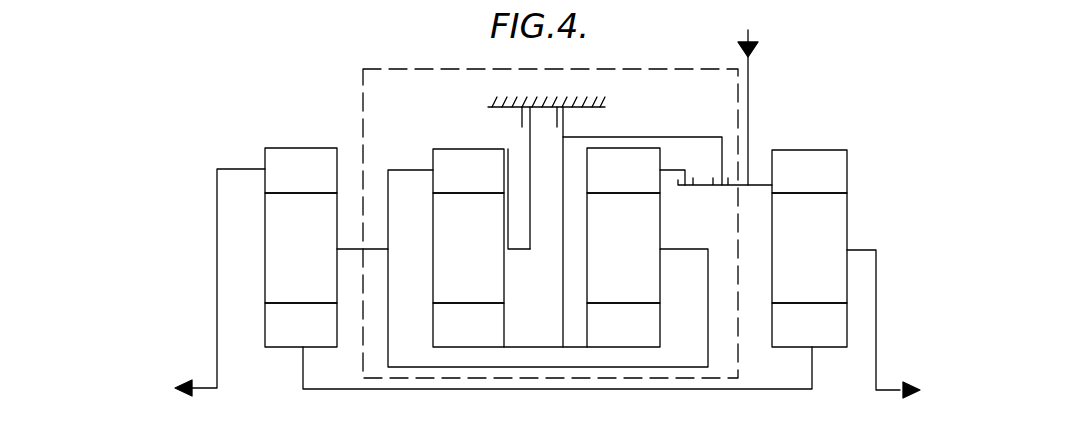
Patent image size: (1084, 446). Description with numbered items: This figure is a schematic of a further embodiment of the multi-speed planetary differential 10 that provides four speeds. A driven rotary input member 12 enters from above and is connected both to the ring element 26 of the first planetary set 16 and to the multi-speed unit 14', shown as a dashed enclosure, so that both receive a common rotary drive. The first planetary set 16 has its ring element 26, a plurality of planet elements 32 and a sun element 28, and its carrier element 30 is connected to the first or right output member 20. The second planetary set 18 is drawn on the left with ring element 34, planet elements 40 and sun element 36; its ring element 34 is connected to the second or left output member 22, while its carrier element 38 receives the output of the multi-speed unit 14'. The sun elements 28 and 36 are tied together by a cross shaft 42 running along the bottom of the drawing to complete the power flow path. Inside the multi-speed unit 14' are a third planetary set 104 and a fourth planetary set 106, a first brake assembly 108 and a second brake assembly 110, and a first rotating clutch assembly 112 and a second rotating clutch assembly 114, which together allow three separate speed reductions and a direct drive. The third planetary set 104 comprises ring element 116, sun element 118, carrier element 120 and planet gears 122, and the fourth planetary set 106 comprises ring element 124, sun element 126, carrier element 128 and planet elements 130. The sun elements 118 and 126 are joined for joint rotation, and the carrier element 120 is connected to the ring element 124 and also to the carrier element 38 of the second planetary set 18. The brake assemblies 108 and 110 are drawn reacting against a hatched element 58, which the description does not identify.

The multi-speed planetary differential 10 is at (287, 76).
The driven rotary input member 12 is at (750, 78).
The multi-speed unit 14' is at (546, 199).
The first planetary set 16 is at (812, 222).
The second planetary set 18 is at (301, 222).
The first output member 20 is at (882, 388).
The second output member 22 is at (212, 386).
The ring element 26 is at (809, 171).
The sun element 28 is at (809, 325).
The carrier element 30 is at (858, 248).
The planet elements 32 is at (809, 248).
The ring element 34 is at (301, 170).
The sun element 36 is at (301, 325).
The carrier element 38 is at (350, 248).
The planet elements 40 is at (301, 248).
The cross shaft 42 is at (345, 388).
The sensing plate 58 is at (553, 100).
The third planetary set 104 is at (645, 219).
The fourth planetary set 106 is at (440, 223).
The first brake assembly 108 is at (570, 122).
The second brake assembly 110 is at (519, 118).
The first rotating clutch assembly 112 is at (682, 188).
The second rotating clutch assembly 114 is at (712, 180).
The ring element 116 is at (623, 170).
The sun element 118 is at (623, 325).
The carrier element 120 is at (672, 248).
The planet gears 122 is at (623, 248).
The ring element 124 is at (468, 171).
The sun element 126 is at (468, 325).
The carrier element 128 is at (513, 250).
The planet elements 130 is at (468, 248).